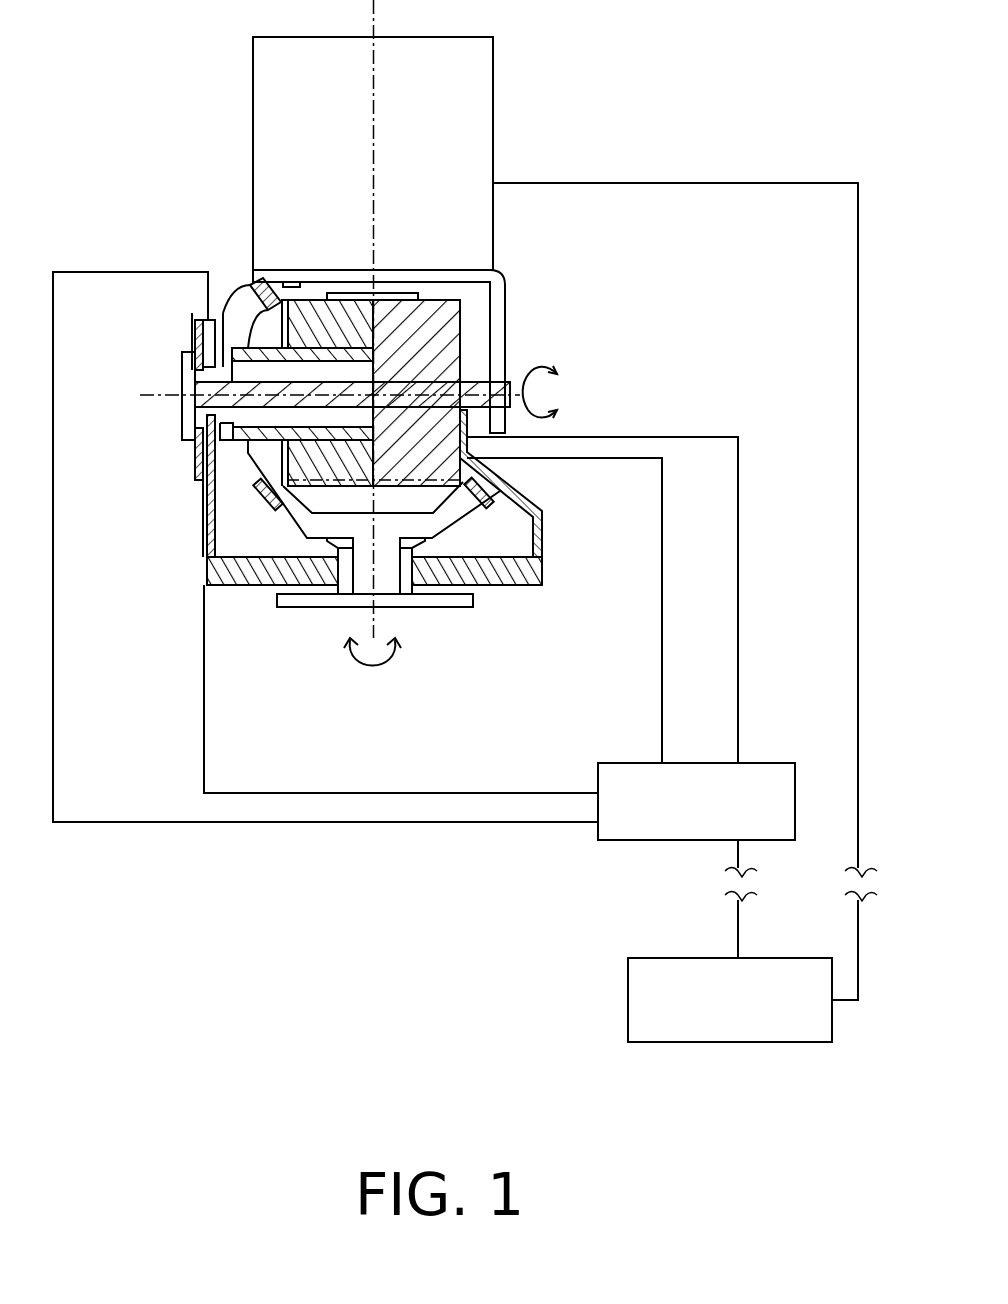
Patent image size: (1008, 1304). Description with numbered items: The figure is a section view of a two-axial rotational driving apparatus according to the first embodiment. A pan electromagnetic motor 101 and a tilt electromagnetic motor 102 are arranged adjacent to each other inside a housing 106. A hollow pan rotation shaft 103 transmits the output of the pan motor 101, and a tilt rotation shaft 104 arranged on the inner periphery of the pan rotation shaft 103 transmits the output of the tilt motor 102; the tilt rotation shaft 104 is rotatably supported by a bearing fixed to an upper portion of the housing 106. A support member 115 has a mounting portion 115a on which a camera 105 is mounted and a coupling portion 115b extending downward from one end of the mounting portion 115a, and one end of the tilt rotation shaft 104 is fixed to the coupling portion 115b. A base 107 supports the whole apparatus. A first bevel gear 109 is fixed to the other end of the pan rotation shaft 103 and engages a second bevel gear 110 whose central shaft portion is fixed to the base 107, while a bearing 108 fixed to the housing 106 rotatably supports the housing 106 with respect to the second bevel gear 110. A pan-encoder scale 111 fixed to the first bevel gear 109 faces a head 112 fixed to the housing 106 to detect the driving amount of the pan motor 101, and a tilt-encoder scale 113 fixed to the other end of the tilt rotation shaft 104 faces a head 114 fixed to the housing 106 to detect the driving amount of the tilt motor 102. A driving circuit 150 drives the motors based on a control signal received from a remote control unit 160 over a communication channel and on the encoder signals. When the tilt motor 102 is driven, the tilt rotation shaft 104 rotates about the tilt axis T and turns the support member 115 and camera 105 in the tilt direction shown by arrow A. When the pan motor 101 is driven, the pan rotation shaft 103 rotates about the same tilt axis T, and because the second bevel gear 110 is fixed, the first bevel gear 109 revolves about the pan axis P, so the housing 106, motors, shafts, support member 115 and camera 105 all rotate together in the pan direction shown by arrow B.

The pan electromagnetic motor 101 is at (307, 308).
The tilt electromagnetic motor 102 is at (455, 335).
The pan rotation shaft 103 is at (220, 330).
The tilt rotation shaft 104 is at (183, 397).
The camera 105 is at (480, 147).
The housing 106 is at (543, 570).
The base 107 is at (455, 600).
The bearing 108 is at (345, 595).
The first bevel gear 109 is at (208, 540).
The second bevel gear 110 is at (492, 479).
The pan-encoder scale 111 is at (223, 295).
The head 112 is at (192, 332).
The tilt-encoder scale 113 is at (195, 467).
The head 114 is at (202, 467).
The support member 115 is at (500, 320).
The mounting portion 115a is at (450, 270).
The coupling portion 115b is at (497, 357).
The driving circuit 150 is at (597, 835).
The control unit 160 is at (628, 1000).
The tilt axis T is at (540, 356).
The arrow A is at (560, 376).
The arrow B is at (360, 672).
The pan axis P is at (385, 590).